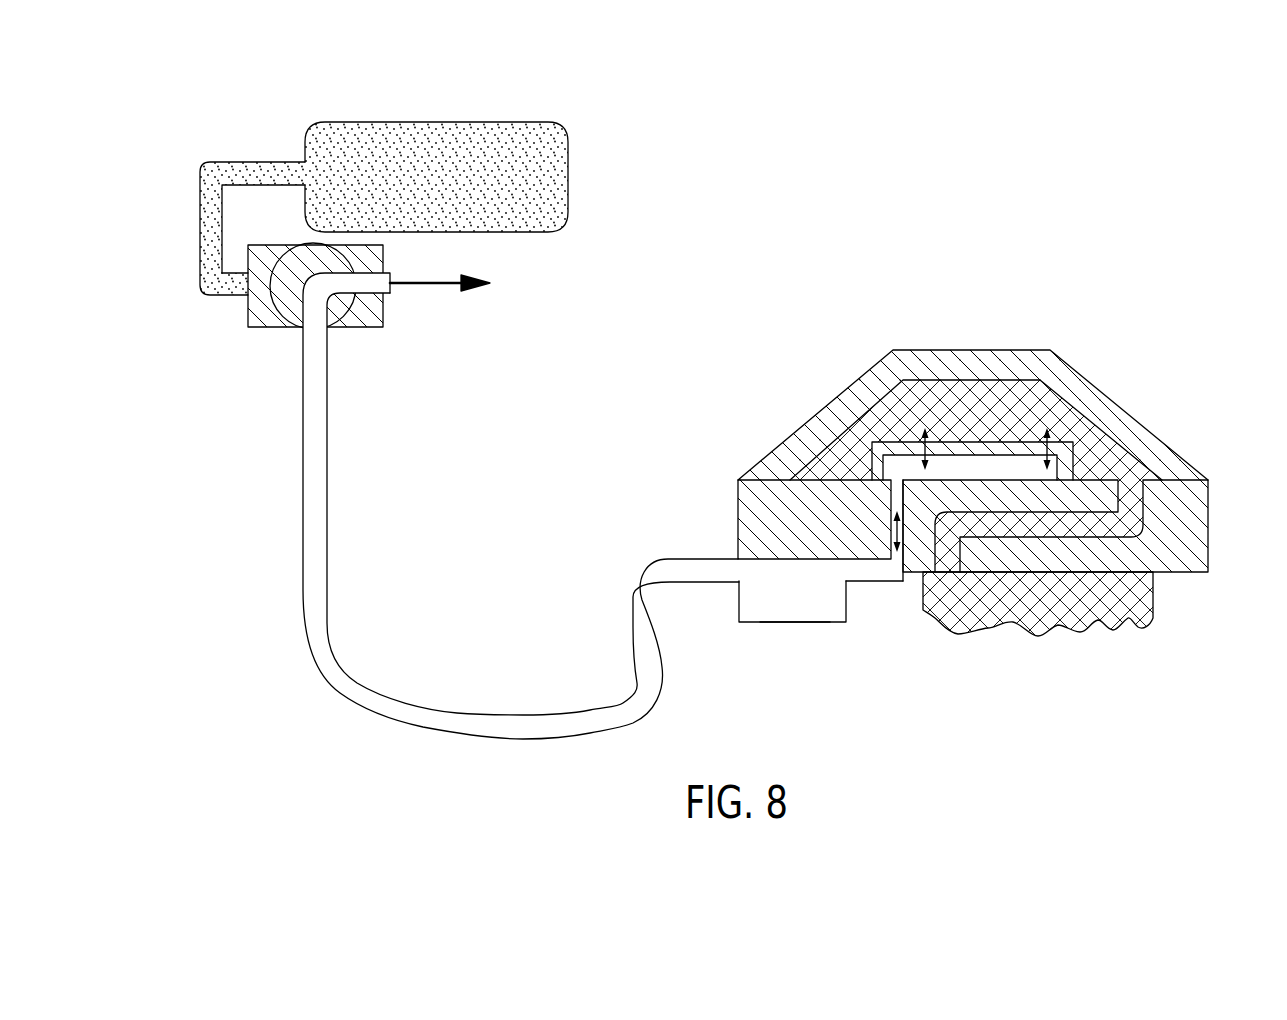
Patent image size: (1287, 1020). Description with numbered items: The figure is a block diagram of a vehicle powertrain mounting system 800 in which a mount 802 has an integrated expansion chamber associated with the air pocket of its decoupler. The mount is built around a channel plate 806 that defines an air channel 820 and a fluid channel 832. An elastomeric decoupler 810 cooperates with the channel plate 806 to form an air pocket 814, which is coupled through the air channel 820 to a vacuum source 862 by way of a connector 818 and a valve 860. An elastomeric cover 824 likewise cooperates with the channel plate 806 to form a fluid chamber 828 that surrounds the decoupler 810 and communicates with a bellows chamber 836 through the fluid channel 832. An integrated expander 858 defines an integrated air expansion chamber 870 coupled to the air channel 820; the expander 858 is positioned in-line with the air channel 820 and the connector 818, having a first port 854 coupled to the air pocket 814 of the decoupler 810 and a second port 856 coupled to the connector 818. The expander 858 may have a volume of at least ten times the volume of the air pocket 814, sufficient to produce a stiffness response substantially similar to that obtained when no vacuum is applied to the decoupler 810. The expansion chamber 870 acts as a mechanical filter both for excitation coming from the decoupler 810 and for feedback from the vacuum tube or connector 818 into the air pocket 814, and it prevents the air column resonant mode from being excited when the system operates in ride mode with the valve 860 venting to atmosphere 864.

The vehicle powertrain mounting system 800 is at (736, 430).
The microfluidic device 802 is at (947, 489).
The channel plate 806 is at (1210, 528).
The elastomeric decoupler 810 is at (910, 447).
The air pocket 814 is at (1050, 470).
The connector 818 is at (340, 650).
The air channel 820 is at (897, 555).
The elastomeric cover 824 is at (1045, 360).
The fluid chamber 828 is at (960, 397).
The fluid channel 832 is at (1130, 518).
The bellows chamber 836 is at (1053, 618).
The first port 854 is at (855, 594).
The second port 856 is at (728, 550).
The integrated expander 858 is at (742, 623).
The valve 860 is at (252, 333).
The vacuum source 862 is at (568, 212).
The atmosphere 864 is at (430, 290).
The integrated air expansion chamber 870 is at (790, 612).